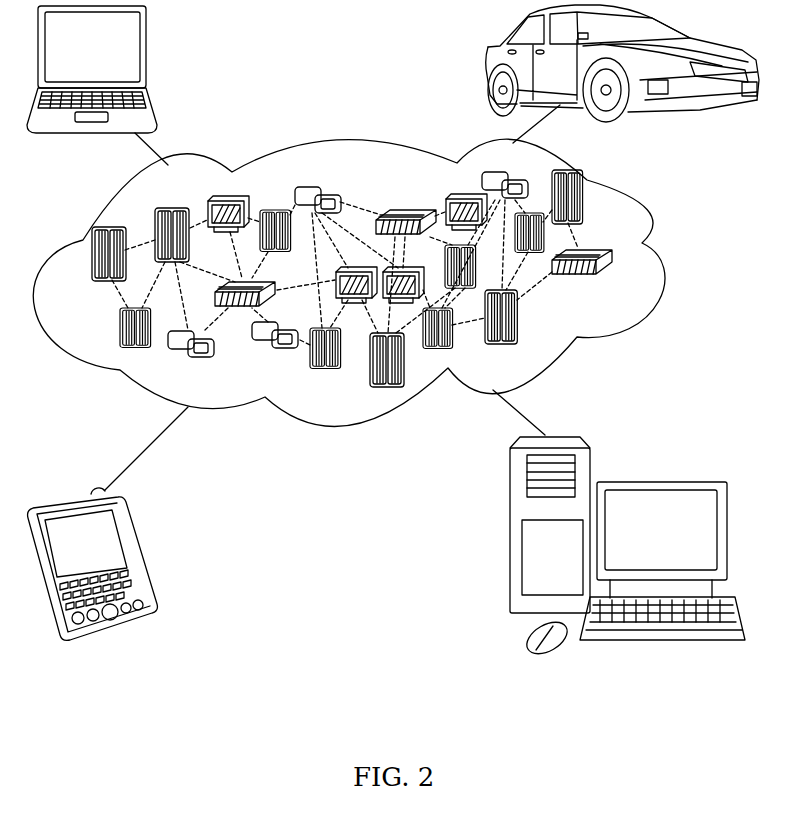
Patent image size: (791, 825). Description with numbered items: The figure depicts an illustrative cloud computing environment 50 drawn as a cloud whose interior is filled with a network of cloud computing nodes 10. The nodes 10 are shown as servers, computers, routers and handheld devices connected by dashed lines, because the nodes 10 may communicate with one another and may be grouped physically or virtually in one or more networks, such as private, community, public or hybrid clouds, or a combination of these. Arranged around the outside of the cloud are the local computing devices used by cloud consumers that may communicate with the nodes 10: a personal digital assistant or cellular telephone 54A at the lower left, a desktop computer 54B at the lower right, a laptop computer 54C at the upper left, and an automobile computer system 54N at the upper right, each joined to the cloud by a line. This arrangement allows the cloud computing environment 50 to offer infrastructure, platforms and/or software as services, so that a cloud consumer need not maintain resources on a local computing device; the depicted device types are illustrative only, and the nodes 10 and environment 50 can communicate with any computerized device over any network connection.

The cloud computing node 10 is at (623, 286).
The cloud computing environment 50 is at (660, 257).
The personal digital assistant or cellular telephone 54A is at (137, 554).
The desktop computer 54B is at (658, 480).
The laptop computer 54C is at (147, 52).
The automobile computer system 54N is at (487, 62).